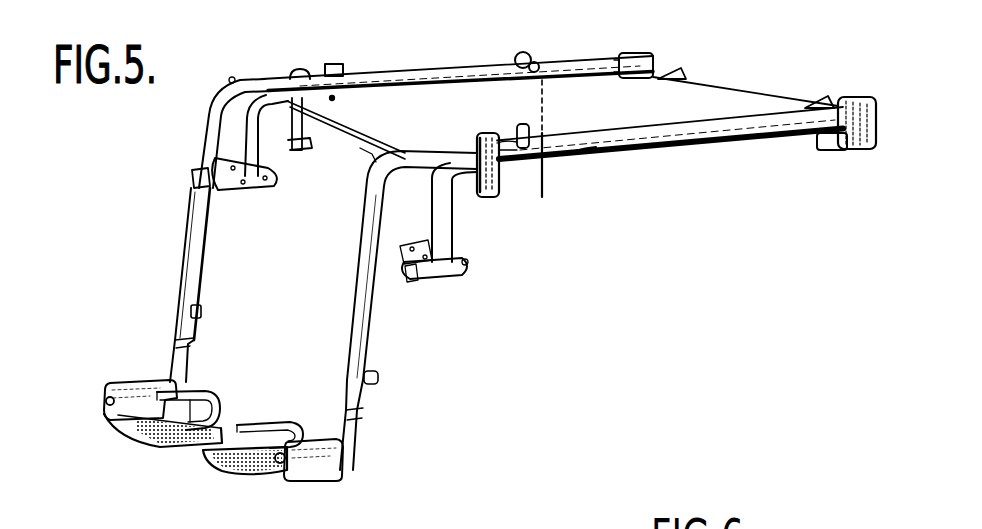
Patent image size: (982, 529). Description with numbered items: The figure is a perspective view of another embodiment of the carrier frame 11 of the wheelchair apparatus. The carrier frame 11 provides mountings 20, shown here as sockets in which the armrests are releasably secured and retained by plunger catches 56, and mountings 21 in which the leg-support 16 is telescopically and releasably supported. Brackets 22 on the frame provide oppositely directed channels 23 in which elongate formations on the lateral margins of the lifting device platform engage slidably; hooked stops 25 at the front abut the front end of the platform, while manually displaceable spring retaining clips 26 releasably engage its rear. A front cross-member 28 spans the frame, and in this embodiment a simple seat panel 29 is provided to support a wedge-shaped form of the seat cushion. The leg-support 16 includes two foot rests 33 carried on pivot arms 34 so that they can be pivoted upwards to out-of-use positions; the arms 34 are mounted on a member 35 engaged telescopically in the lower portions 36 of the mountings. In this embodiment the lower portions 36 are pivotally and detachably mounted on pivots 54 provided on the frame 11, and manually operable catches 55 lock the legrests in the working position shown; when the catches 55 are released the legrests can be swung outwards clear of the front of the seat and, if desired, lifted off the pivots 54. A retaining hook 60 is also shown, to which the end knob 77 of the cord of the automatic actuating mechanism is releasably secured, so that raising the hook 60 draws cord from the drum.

The carrier frame 11 is at (417, 70).
The leg-support 16 is at (158, 368).
The mountings 20 is at (497, 186).
The mountings 21 is at (363, 264).
The brackets 22 is at (466, 199).
The channels 23 is at (295, 137).
The hooked stops 25 is at (328, 123).
The spring retaining clips 26 is at (673, 66).
The front cross-member 28 is at (368, 150).
The seat panel 29 is at (670, 151).
The foot rests 33 is at (161, 448).
The pivot arms 34 is at (108, 410).
The member 35 is at (186, 380).
The lower portions 36 is at (194, 288).
The pivots 54 is at (236, 158).
The catches 55 is at (198, 178).
The plunger catches 56 is at (333, 65).
The retaining hook 60 is at (563, 80).
The end knob 77 is at (531, 57).